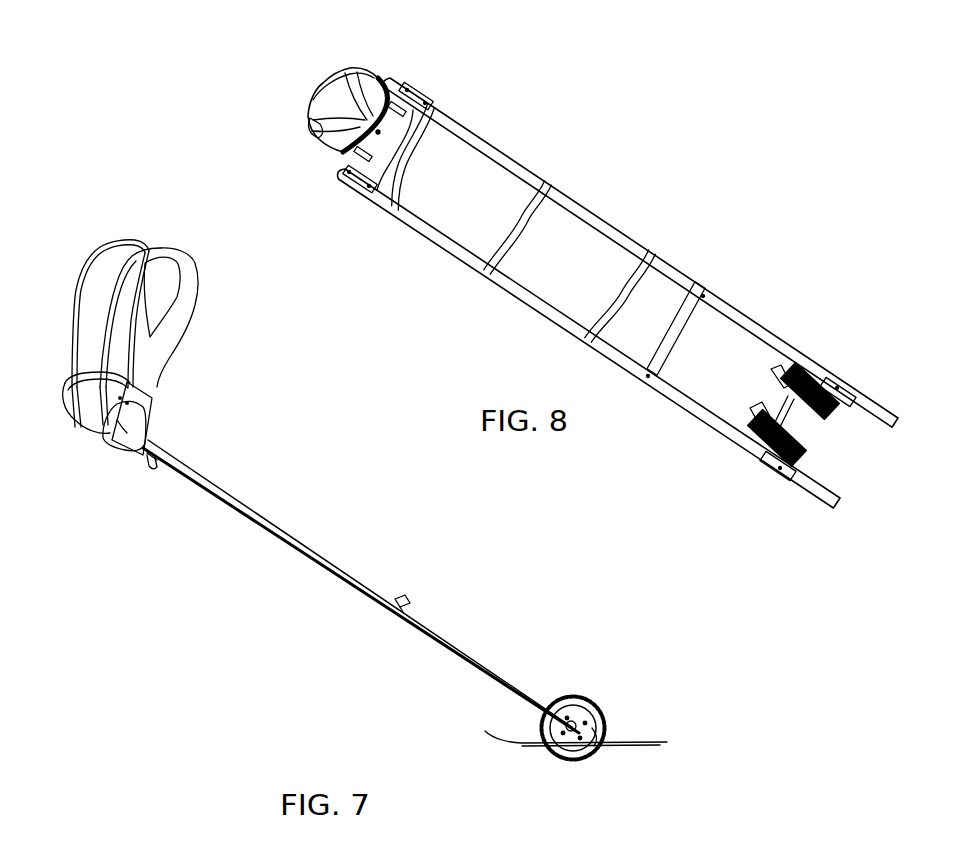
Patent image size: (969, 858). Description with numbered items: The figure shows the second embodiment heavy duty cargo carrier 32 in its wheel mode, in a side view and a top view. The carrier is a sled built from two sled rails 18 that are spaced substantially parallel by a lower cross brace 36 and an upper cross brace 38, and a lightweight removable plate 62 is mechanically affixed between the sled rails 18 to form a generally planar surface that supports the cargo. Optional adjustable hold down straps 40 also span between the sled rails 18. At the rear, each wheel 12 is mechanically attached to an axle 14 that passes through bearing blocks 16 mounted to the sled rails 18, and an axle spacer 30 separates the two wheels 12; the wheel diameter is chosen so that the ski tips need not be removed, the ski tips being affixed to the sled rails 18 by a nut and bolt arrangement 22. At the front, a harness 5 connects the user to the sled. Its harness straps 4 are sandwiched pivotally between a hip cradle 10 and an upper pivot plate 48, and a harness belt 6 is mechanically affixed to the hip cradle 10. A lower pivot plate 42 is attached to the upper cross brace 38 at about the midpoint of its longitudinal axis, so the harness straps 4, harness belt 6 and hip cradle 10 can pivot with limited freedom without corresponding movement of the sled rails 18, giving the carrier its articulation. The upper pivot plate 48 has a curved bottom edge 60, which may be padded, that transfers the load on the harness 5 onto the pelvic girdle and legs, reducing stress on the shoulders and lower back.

In FIG. 8, the harness straps 4 is at (322, 122).
In FIG. 7, the harness straps 4 is at (95, 253).
In FIG. 7, the harness 5 is at (204, 326).
In FIG. 8, the harness belt 6 is at (318, 95).
In FIG. 7, the harness belt 6 is at (95, 427).
In FIG. 8, the hip cradle 10 is at (365, 66).
In FIG. 7, the hip cradle 10 is at (113, 438).
In FIG. 8, the wheel 12 is at (811, 352).
In FIG. 7, the wheel 12 is at (597, 752).
In FIG. 8, the axle 14 is at (838, 412).
In FIG. 7, the axle 14 is at (560, 750).
In FIG. 8, the bearing blocks 16 is at (757, 460).
In FIG. 7, the bearing blocks 16 is at (570, 757).
In FIG. 8, the sled rails 18 is at (600, 212).
In FIG. 8, the nut and bolt arrangement 22 is at (840, 380).
In FIG. 8, the axle spacer 30 is at (806, 418).
In FIG. 8, the heavy duty cargo carrier 32 is at (544, 120).
In FIG. 7, the heavy duty cargo carrier 32 is at (314, 496).
In FIG. 8, the lower cross brace 36 is at (695, 290).
In FIG. 8, the upper cross brace 38 is at (412, 118).
In FIG. 8, the adjustable hold down straps 40 is at (477, 266).
In FIG. 8, the lower pivot plate 42 is at (352, 157).
In FIG. 7, the lower pivot plate 42 is at (156, 467).
In FIG. 7, the upper pivot plate 48 is at (152, 398).
In FIG. 7, the curved bottom edge 60 is at (148, 465).
In FIG. 8, the removable plate 62 is at (557, 275).
In FIG. 7, the removable plate 62 is at (307, 557).